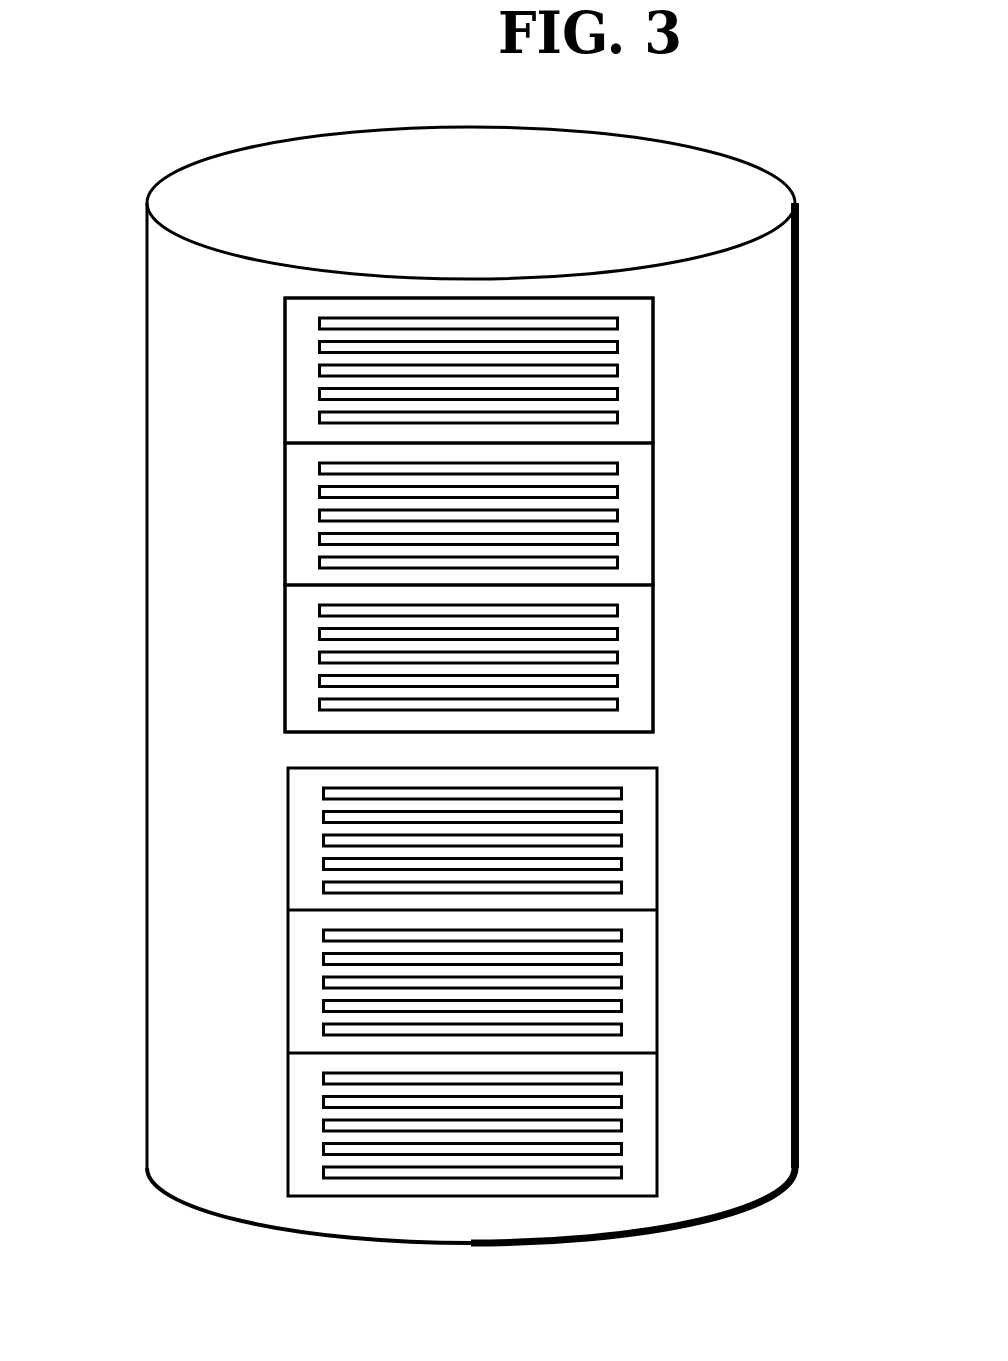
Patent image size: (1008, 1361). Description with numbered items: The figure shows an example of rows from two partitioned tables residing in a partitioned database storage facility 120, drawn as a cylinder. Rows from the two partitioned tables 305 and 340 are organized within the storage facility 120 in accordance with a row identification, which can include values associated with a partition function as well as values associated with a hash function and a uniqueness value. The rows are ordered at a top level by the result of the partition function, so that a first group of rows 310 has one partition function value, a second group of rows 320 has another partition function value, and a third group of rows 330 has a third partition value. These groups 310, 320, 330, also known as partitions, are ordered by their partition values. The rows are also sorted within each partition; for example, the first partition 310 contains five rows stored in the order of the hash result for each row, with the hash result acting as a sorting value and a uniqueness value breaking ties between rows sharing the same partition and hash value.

The partitioned database storage facility 120 is at (247, 147).
The partitioned table 305 is at (287, 530).
The first group of rows 310 is at (638, 373).
The second group of rows 320 is at (638, 508).
The third group of rows 330 is at (638, 652).
The partitioned table 340 is at (305, 982).